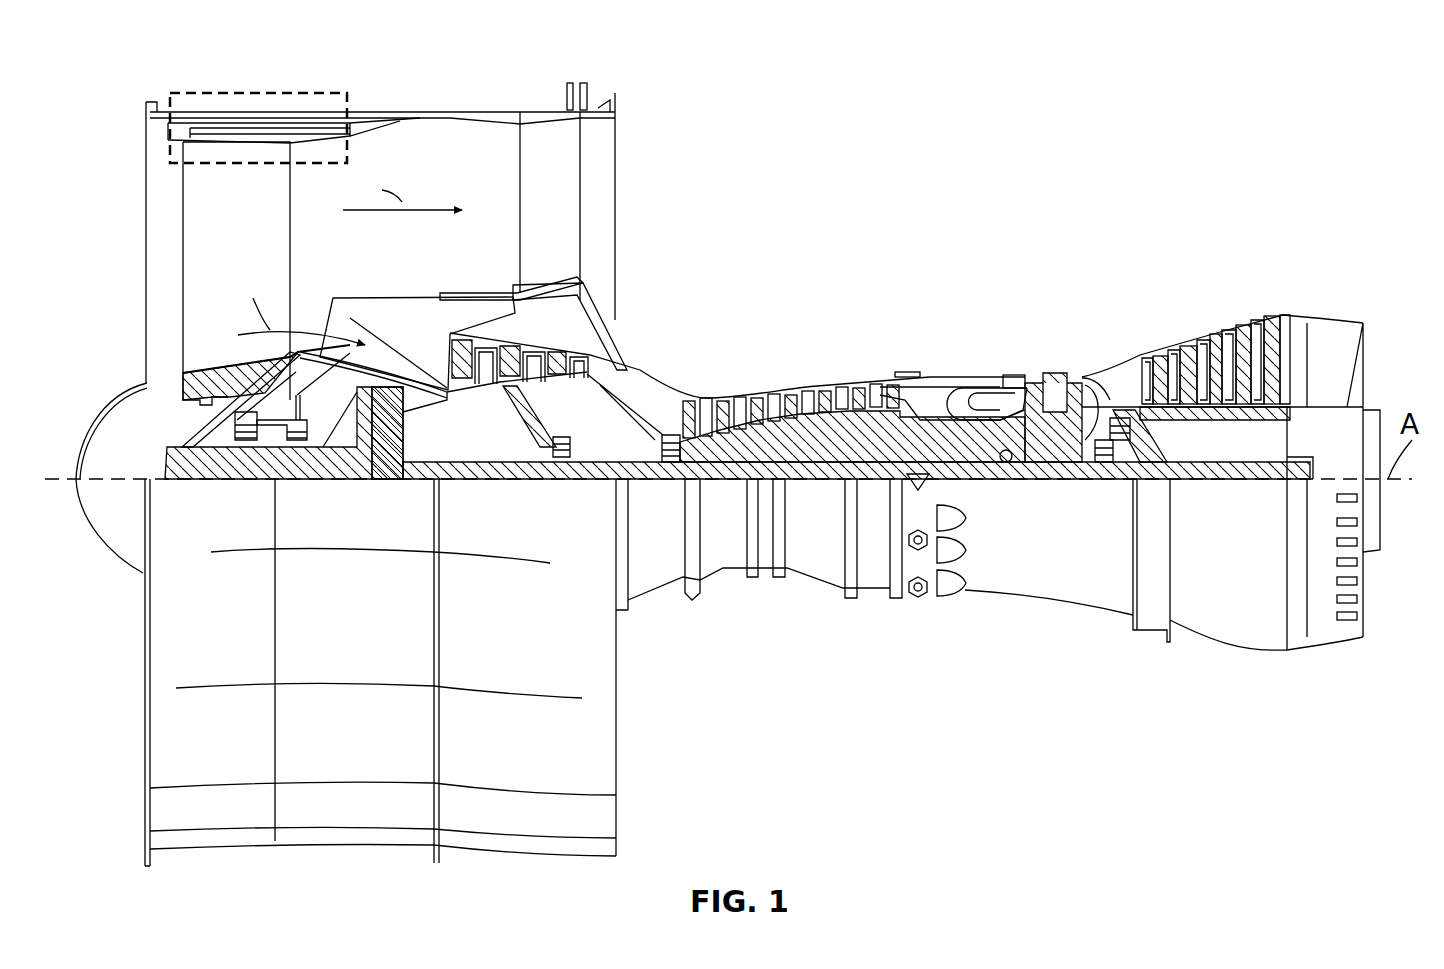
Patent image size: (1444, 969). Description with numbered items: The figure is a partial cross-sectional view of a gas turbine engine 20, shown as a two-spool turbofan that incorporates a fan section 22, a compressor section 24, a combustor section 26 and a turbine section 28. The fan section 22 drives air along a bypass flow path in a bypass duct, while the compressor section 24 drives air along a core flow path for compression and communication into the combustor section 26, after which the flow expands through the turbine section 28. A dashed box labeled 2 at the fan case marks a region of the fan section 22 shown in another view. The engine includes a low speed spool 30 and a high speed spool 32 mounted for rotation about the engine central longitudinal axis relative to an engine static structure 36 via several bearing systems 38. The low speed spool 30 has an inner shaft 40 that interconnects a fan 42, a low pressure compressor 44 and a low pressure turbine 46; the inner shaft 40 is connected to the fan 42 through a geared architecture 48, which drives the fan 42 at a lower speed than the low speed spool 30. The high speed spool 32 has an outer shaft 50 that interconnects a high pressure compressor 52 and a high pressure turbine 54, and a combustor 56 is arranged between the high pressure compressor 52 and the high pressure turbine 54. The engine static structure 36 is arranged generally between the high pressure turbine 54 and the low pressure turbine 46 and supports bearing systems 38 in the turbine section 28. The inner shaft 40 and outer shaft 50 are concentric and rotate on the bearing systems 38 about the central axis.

The gas turbine engine 20 is at (1256, 80).
The fan section 22 is at (238, 112).
The section view indicator 2 is at (324, 80).
The fan 42 is at (246, 212).
The low pressure compressor 44 is at (550, 322).
The compressor section 24 is at (674, 309).
The combustor section 26 is at (926, 311).
The turbine section 28 is at (1178, 318).
The low pressure turbine 46 is at (1216, 336).
The high speed spool 32 is at (893, 433).
The high pressure compressor 52 is at (797, 447).
The high pressure turbine 54 is at (1055, 378).
The combustor 56 is at (970, 402).
The bearing systems 38 is at (267, 449).
The geared architecture 48 is at (352, 470).
The inner shaft 40 is at (668, 481).
The low speed spool 30 is at (835, 483).
The outer shaft 50 is at (1005, 472).
The engine static structure 36 is at (873, 600).